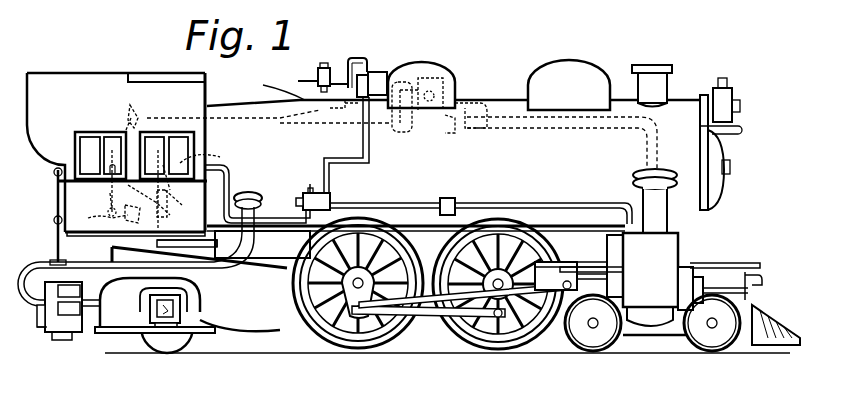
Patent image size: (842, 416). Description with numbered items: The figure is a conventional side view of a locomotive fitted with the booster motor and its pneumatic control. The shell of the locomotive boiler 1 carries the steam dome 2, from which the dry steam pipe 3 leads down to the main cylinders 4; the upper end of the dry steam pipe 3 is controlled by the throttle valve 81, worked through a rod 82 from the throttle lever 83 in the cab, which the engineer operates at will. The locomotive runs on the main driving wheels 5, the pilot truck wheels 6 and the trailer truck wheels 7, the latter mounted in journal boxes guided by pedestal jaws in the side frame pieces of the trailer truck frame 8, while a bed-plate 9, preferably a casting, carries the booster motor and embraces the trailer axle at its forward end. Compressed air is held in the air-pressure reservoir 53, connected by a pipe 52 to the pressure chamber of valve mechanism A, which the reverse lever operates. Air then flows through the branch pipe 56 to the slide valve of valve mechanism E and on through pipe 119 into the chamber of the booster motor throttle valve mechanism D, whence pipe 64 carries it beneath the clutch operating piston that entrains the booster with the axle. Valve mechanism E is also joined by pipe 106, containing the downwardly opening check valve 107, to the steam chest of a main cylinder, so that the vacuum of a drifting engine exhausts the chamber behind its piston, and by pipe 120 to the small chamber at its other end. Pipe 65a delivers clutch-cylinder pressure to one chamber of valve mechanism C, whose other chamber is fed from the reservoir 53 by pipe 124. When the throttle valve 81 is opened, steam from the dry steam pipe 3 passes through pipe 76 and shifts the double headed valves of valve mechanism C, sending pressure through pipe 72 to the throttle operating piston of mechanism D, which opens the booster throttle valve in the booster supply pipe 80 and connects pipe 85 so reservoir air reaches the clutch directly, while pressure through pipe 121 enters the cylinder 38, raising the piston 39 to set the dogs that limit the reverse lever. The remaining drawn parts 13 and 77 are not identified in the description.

The shell of locomotive boiler 1 is at (468, 172).
The steam dome 2 is at (418, 63).
The dry steam pipe 3 is at (538, 125).
The main cylinders 4 is at (684, 247).
The main driving wheels 5 is at (348, 347).
The pilot truck wheels 6 is at (600, 343).
The trailer truck wheels 7 is at (170, 343).
The trailer truck frame 8 is at (252, 327).
The bed-plate 9 is at (95, 333).
The step bracket 13 is at (43, 330).
The cylinder 38 is at (100, 186).
The piston 39 is at (110, 193).
The pipe 52 is at (178, 245).
The air-pressure reservoir 53 is at (416, 242).
The pipe 56 is at (150, 205).
The pipe 64 is at (302, 80).
The pipe 65a is at (352, 57).
The pipe 72 is at (367, 62).
The pipe 76 is at (465, 110).
The pipe 77 is at (268, 91).
The booster supply pipe 80 is at (262, 212).
The throttle valve 81 is at (430, 80).
The rod 82 is at (173, 117).
The throttle lever 83 is at (133, 117).
The pipe 85 is at (333, 72).
The pipe 106 is at (386, 204).
The check valve 107 is at (450, 198).
The pipe 119 is at (347, 205).
The pipe 120 is at (311, 190).
The pipe 121 is at (355, 162).
The pipe 124 is at (345, 98).
The valve mechanism A is at (177, 197).
The valve mechanism C is at (378, 72).
The booster motor throttle valve mechanism D is at (322, 66).
The valve mechanism E is at (330, 198).